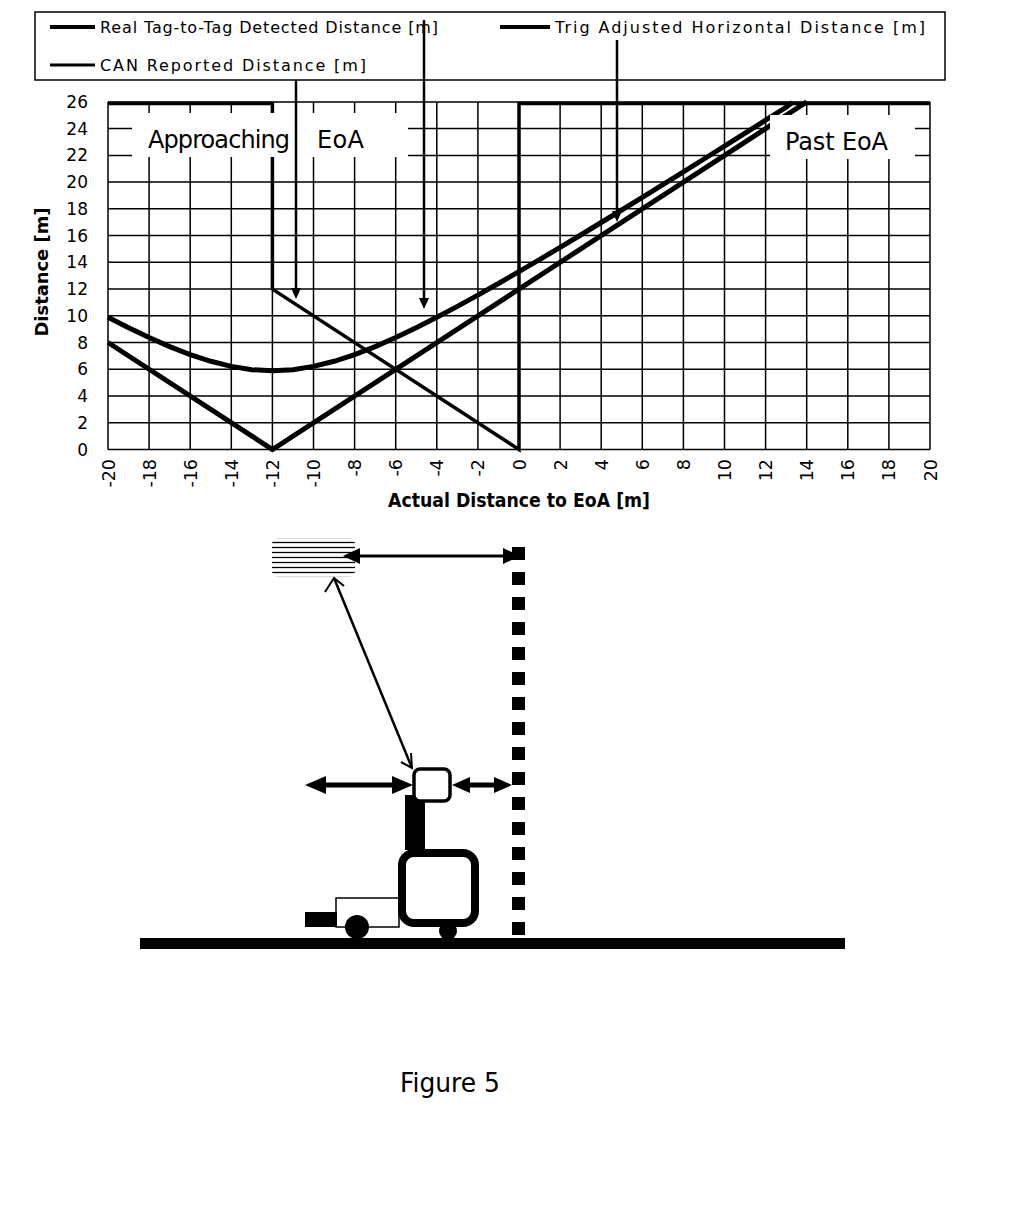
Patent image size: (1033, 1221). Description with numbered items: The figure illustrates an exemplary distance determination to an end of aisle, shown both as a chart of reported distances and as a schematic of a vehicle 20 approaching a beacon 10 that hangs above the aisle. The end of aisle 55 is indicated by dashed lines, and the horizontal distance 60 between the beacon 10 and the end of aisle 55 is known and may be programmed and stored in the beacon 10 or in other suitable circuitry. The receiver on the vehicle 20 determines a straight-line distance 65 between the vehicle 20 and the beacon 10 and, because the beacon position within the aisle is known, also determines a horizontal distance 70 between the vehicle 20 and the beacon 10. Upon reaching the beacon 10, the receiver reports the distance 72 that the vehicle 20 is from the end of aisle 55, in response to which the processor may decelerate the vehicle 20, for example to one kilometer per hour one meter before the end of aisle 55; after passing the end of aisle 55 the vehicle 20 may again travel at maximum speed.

The beacon 10 is at (270, 556).
The vehicle 20 is at (332, 903).
The end of aisle 55 is at (525, 578).
The horizontal distance 60 is at (431, 562).
The straight-line distance 65 is at (377, 682).
The horizontal distance 70 is at (325, 777).
The distance 72 is at (495, 780).